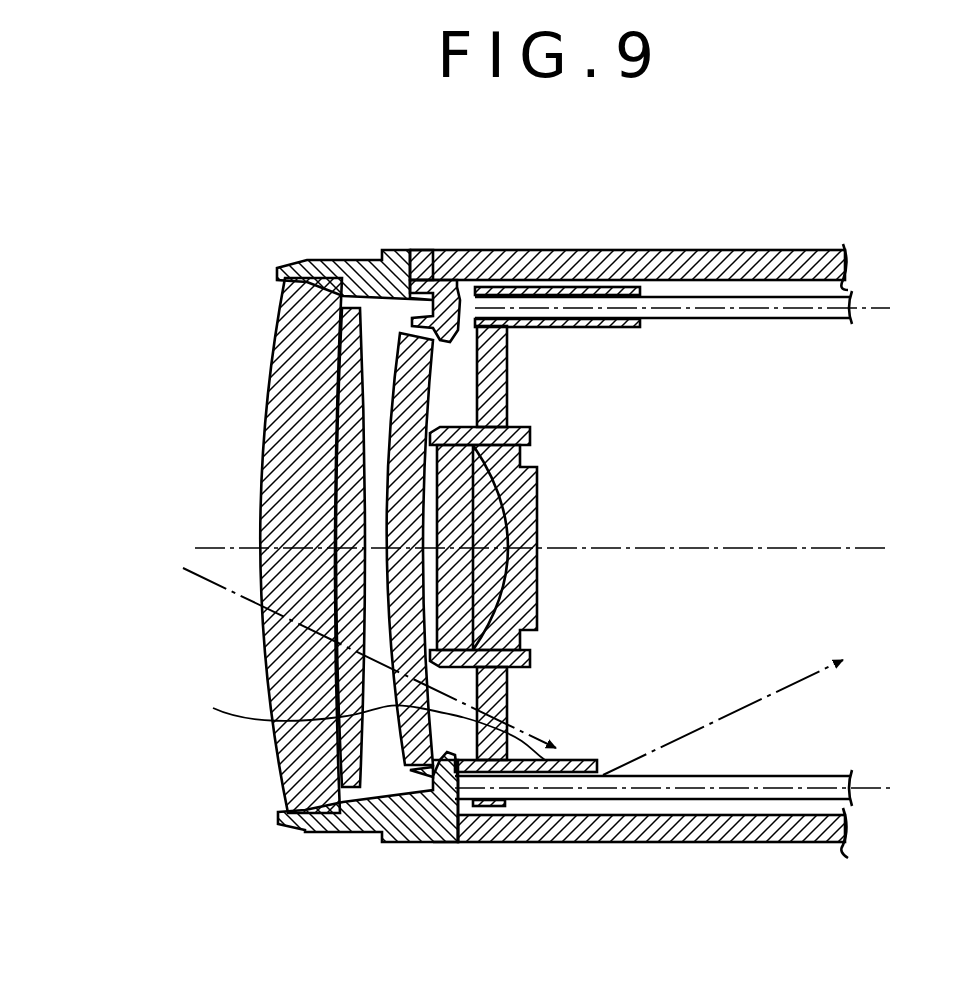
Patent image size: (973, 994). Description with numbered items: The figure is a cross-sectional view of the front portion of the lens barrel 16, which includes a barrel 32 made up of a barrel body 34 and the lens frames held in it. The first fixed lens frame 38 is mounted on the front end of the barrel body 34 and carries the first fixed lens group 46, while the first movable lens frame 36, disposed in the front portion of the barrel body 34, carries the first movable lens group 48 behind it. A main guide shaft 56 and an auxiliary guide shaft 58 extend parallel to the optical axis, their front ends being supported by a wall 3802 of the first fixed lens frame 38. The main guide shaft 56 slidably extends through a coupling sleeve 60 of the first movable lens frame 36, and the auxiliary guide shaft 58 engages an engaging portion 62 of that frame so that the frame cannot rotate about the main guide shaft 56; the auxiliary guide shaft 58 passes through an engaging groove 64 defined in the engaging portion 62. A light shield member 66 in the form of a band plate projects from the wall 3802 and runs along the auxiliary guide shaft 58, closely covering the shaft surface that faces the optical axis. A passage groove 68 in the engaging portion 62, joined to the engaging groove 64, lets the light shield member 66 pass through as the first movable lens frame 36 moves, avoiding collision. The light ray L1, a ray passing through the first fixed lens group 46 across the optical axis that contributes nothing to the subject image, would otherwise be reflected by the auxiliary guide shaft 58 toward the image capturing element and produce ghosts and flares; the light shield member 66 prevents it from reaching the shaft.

The lens barrel 16 is at (659, 475).
The barrel 32 is at (629, 513).
The barrel body 34 is at (728, 250).
The first fixed lens frame 38 is at (394, 553).
The wall 3802 is at (447, 252).
The first movable lens frame 36 is at (510, 385).
The first fixed lens group 46 is at (268, 384).
The first movable lens group 48 is at (541, 500).
The coupling sleeve 60 is at (627, 329).
The main guide shaft 56 is at (767, 320).
The auxiliary guide shaft 58 is at (800, 774).
The engaging portion 62 is at (445, 738).
The engaging groove 64 is at (490, 804).
The light shield member 66 is at (566, 762).
The passage groove 68 is at (355, 720).
The light ray L1 is at (545, 745).